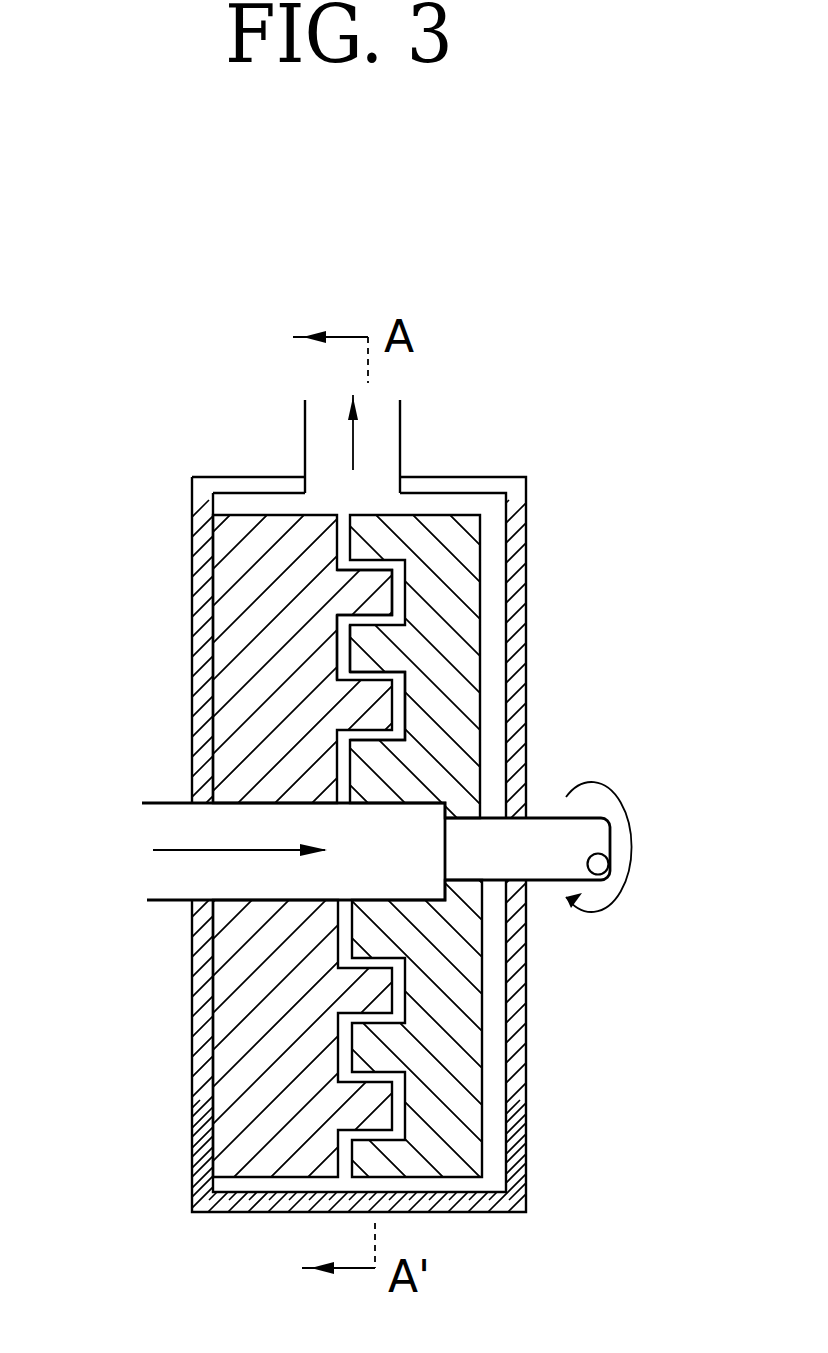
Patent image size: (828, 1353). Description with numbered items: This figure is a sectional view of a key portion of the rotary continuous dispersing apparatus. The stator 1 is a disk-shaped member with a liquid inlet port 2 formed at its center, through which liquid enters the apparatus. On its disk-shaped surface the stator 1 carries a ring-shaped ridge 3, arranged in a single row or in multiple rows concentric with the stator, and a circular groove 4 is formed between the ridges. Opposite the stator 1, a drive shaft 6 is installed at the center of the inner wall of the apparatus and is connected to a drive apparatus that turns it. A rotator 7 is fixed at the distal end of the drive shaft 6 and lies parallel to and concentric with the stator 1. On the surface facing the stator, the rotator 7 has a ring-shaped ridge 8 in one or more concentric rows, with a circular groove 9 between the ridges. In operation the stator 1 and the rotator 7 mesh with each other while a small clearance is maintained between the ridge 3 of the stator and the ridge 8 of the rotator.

The stator 1 is at (233, 552).
The liquid inlet port 2 is at (162, 812).
The ring-shaped ridge 3 is at (400, 578).
The circular groove 4 is at (347, 662).
The drive shaft 6 is at (535, 833).
The rotator 7 is at (470, 625).
The ring-shaped ridge 8 is at (347, 633).
The circular groove 9 is at (400, 710).